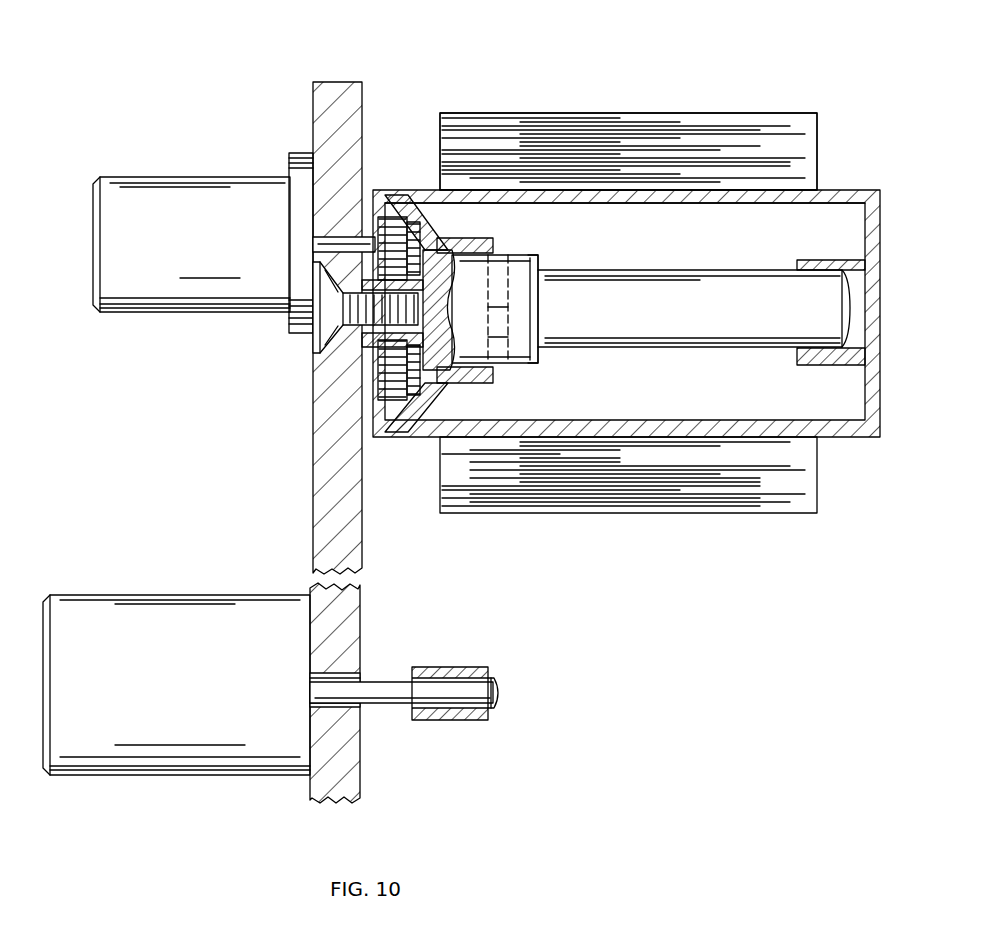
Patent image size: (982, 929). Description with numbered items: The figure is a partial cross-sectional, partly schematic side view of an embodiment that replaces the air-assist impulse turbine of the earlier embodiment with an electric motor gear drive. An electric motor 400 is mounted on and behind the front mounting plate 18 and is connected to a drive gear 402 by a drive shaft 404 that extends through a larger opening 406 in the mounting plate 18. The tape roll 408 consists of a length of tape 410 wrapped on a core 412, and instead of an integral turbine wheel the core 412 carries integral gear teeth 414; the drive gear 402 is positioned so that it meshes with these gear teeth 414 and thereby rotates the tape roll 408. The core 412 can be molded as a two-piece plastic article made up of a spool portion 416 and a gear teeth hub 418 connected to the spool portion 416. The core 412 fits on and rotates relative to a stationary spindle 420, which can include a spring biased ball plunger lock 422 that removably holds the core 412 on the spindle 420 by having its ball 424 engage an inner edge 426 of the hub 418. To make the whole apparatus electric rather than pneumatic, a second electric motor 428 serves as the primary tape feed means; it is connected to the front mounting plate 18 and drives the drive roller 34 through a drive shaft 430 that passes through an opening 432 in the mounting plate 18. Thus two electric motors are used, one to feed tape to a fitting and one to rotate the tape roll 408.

The front mounting plate 18 is at (313, 470).
The drive roller 34 is at (468, 668).
The electric motor 400 is at (178, 306).
The drive gear 402 is at (404, 215).
The drive shaft 404 is at (313, 245).
The larger opening 406 is at (335, 232).
The tape roll 408 is at (748, 103).
The tape 410 is at (592, 118).
The core 412 is at (840, 186).
The gear teeth 414 is at (407, 437).
The spool portion 416 is at (668, 204).
The gear teeth hub 418 is at (470, 242).
The stationary spindle 420 is at (597, 344).
The spring biased ball plunger lock 422 is at (508, 250).
The ball 424 is at (536, 266).
The inner edge 426 is at (496, 382).
The second electric motor 428 is at (158, 603).
The drive shaft 430 is at (380, 685).
The opening 432 is at (345, 700).